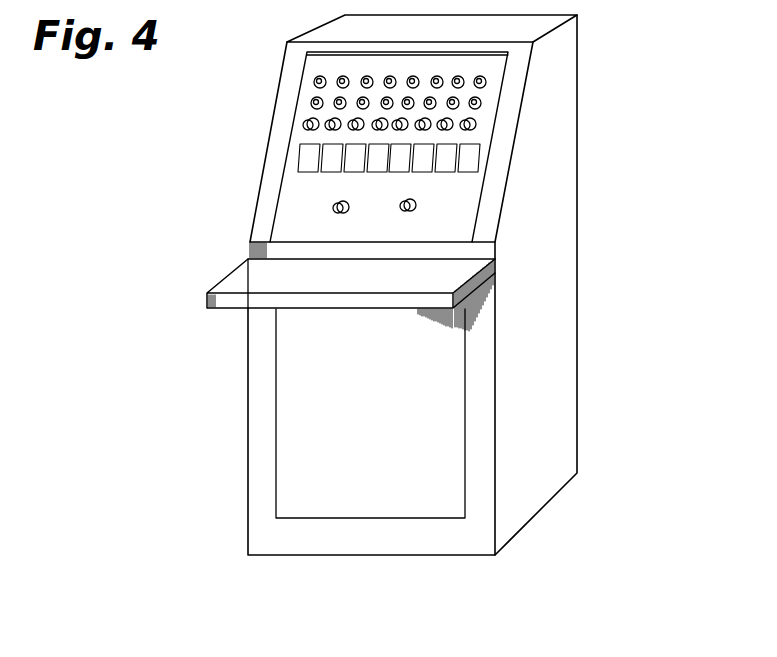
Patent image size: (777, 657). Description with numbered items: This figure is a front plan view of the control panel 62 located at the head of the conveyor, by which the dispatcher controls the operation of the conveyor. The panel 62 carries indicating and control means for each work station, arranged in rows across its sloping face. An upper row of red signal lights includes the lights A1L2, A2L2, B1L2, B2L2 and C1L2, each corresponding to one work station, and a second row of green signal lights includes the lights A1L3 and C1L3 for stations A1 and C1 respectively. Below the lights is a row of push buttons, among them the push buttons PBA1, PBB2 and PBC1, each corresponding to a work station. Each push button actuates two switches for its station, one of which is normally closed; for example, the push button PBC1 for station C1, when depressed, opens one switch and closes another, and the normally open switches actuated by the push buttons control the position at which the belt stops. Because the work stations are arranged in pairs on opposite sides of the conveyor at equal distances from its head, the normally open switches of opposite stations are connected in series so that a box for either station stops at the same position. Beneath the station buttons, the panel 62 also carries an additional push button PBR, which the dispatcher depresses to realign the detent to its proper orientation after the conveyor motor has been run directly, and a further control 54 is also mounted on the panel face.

The control panel 62 is at (465, 217).
The push button 54 is at (406, 212).
The additional push button PBR is at (333, 208).
The red signal light A1L2 is at (314, 81).
The red signal light A2L2 is at (338, 76).
The red signal light B1L2 is at (364, 77).
The red signal light B2L2 is at (390, 76).
The red signal light C1L2 is at (415, 77).
The green signal light A1L3 is at (311, 103).
The green signal light C1L3 is at (409, 108).
The push button PBA1 is at (303, 124).
The push button PBB2 is at (374, 126).
The push button PBC1 is at (401, 130).